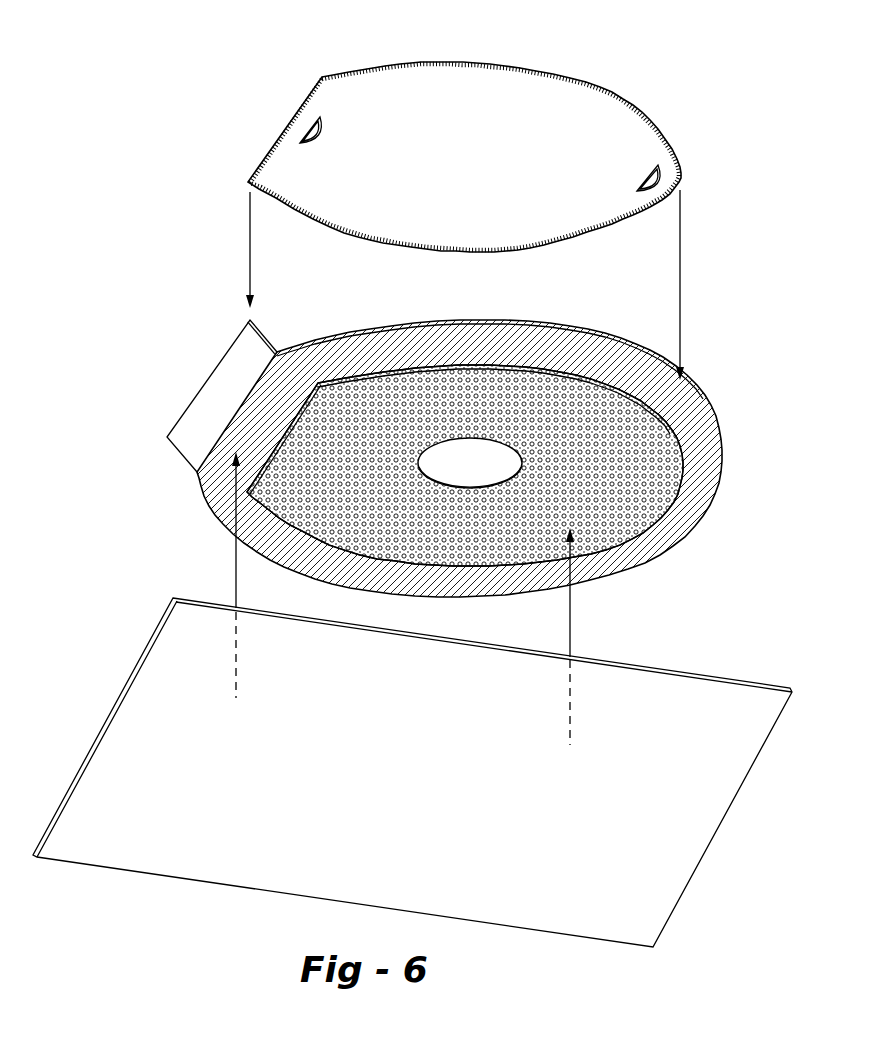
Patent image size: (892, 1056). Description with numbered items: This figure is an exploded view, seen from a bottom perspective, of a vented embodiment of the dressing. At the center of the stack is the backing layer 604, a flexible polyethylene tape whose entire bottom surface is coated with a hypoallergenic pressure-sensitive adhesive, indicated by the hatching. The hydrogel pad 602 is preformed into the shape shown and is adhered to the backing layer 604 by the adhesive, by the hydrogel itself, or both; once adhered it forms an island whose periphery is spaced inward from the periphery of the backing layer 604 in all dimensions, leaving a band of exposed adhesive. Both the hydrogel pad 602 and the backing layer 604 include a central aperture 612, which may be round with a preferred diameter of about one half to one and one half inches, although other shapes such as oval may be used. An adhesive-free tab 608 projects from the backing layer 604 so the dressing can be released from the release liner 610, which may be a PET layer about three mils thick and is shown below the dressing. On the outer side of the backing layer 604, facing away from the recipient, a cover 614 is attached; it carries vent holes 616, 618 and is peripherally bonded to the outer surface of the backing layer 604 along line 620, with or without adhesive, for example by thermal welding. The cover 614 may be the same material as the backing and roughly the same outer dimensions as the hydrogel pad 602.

The hydrogel pad 602 is at (670, 440).
The backing layer 604 is at (690, 400).
The adhesive-free tab 608 is at (232, 367).
The release liner 610 is at (412, 772).
The central aperture 612 is at (467, 462).
The cover 614 is at (464, 157).
The vent hole 616 is at (299, 116).
The vent hole 618 is at (646, 178).
The peripheral bond line 620 is at (401, 56).